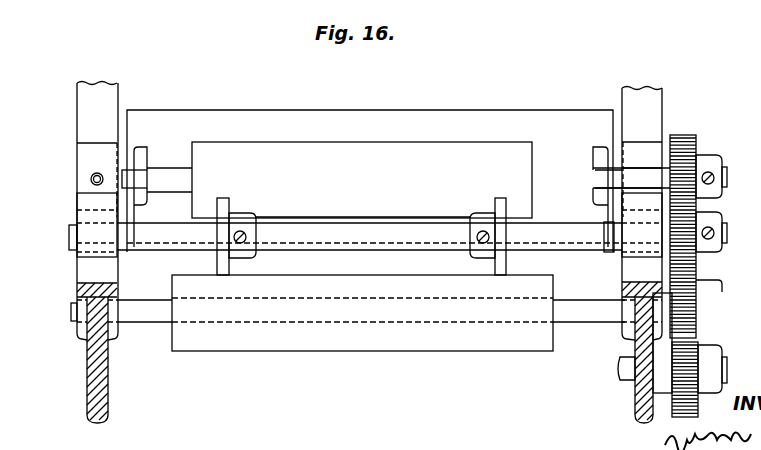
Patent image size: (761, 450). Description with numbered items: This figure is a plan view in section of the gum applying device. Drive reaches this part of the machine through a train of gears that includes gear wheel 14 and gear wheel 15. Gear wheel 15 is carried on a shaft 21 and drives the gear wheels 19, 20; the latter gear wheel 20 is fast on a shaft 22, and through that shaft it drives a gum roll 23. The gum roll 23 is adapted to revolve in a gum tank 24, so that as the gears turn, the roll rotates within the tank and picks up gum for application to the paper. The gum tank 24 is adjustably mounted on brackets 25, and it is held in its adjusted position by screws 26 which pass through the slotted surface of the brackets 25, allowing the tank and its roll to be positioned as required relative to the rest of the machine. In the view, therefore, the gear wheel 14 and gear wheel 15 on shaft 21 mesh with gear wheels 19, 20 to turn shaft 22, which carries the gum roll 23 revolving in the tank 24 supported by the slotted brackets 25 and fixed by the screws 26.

The gear wheel 14 is at (705, 372).
The gear wheel 15 is at (712, 298).
The gear wheel 19 is at (704, 219).
The gear wheel 20 is at (712, 156).
The shaft 21 is at (581, 308).
The shaft 22 is at (553, 168).
The gum roll 23 is at (273, 141).
The gum tank 24 is at (381, 115).
The brackets 25 is at (101, 108).
The screws 26 is at (91, 176).